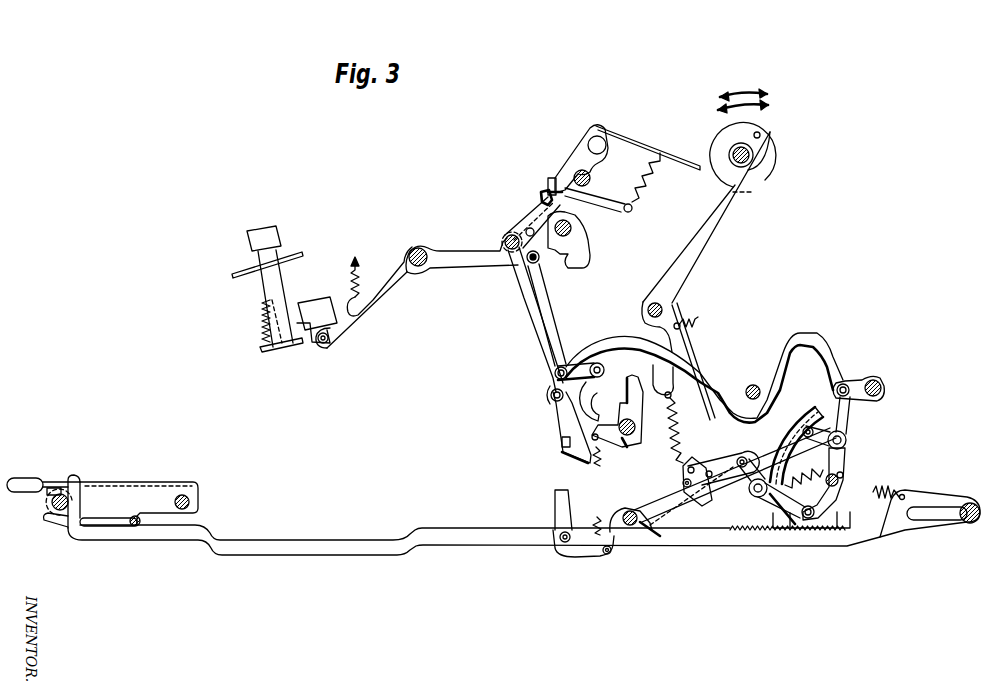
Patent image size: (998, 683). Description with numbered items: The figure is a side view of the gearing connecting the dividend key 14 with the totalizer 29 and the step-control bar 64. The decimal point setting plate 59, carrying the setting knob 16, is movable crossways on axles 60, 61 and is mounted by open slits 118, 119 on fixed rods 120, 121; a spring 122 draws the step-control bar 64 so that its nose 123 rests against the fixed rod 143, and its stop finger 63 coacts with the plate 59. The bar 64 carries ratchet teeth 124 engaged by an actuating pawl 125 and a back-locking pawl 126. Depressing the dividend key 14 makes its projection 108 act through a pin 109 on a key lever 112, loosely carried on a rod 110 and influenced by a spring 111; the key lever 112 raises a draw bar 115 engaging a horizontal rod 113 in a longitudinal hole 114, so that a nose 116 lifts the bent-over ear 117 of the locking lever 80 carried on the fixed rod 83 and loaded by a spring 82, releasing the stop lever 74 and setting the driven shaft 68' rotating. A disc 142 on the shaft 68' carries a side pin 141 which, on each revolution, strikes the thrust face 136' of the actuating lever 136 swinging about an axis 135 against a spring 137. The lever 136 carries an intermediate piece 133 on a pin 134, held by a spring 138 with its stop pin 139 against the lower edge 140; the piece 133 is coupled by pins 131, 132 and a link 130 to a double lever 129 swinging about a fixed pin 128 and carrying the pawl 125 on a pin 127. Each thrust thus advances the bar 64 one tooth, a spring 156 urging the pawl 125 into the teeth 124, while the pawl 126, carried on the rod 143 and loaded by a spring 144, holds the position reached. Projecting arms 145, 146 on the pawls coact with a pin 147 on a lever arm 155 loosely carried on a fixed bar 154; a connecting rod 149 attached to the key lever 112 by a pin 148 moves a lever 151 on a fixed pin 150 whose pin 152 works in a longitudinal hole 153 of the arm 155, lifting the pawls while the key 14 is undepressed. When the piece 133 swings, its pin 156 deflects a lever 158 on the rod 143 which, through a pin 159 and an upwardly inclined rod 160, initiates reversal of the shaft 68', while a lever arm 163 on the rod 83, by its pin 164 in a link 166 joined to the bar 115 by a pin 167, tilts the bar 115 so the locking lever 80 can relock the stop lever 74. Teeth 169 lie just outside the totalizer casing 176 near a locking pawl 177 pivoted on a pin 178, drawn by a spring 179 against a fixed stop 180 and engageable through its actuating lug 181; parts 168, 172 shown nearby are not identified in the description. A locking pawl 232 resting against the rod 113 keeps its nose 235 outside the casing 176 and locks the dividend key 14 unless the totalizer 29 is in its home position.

The dividend key 14 is at (262, 232).
The setting knob 16 is at (29, 480).
The totalizer 29 is at (571, 155).
The decimal point setting plate 59 is at (160, 482).
The axle 60 is at (51, 503).
The axle 61 is at (190, 500).
The stop finger 63 is at (75, 478).
The step-control bar 64 is at (416, 528).
The driven shaft 68' is at (774, 162).
The stop lever 74 is at (628, 380).
The locking lever 80 is at (640, 428).
The spring 82 is at (595, 464).
The fixed rod 83 is at (628, 442).
The projection 108 is at (318, 303).
The pin 109 is at (321, 345).
The rod 110 is at (416, 246).
The spring 111 is at (353, 265).
The key lever 112 is at (395, 287).
The horizontal rod 113 is at (505, 242).
The longitudinal hole 114 is at (508, 235).
The draw bar 115 is at (530, 298).
The nose 116 is at (575, 458).
The bent over ear 117 is at (560, 441).
The open slit 118 is at (91, 526).
The open slit 119 is at (922, 510).
The fixed rod 120 is at (136, 526).
The fixed rod 121 is at (965, 522).
The spring 122 is at (884, 502).
The nose 123 is at (642, 528).
The ratchet gear 124 is at (733, 540).
The actuating pawl 125 is at (850, 532).
The back locking pawl 126 is at (758, 548).
The pin 127 is at (826, 503).
The fixed pin 128 is at (838, 481).
The double lever 129 is at (845, 494).
The link 130 is at (846, 449).
The pin 131 is at (846, 438).
The pin 132 is at (762, 498).
The intermediate piece 133 is at (695, 465).
The pin 134 is at (744, 458).
The axis 135 is at (648, 303).
The actuating lever 136 is at (706, 217).
The thrust face 136' is at (779, 164).
The spring 137 is at (700, 315).
The spring 138 is at (680, 440).
The stop pin 139 is at (703, 497).
The lower edge 140 is at (688, 470).
The side pin 141 is at (760, 138).
The disc 142 is at (775, 155).
The fixed rod 143 is at (628, 511).
The spring 144 is at (596, 520).
The projecting arm 145 is at (815, 405).
The projecting arm 146 is at (785, 440).
The pin 147 is at (815, 430).
The pin 148 is at (527, 262).
The connecting rod 149 is at (546, 287).
The fixed pin 150 is at (750, 385).
The lever 151 is at (800, 338).
The pin 152 is at (847, 384).
The longitudinal hole 153 is at (841, 385).
The fixed bar 154 is at (882, 386).
The lever arm 155 is at (882, 395).
The spring 156 is at (843, 475).
The lever 158 is at (590, 558).
The pin 159 is at (562, 542).
The upwardly inclined rod 160 is at (557, 505).
The lever arm 163 is at (585, 393).
The pin 164 is at (598, 362).
The link 166 is at (565, 365).
The pin 167 is at (550, 395).
The pivot pin 168 is at (573, 232).
The teeth 169 is at (538, 203).
The lever 172 is at (580, 255).
The casing 176 is at (641, 146).
The locking pawl 177 is at (622, 216).
The pin 178 is at (592, 181).
The spring 179 is at (648, 183).
The fixed stop 180 is at (598, 136).
The actuating lug 181 is at (563, 199).
The locking pawl 232 is at (530, 228).
The nose 235 is at (548, 190).